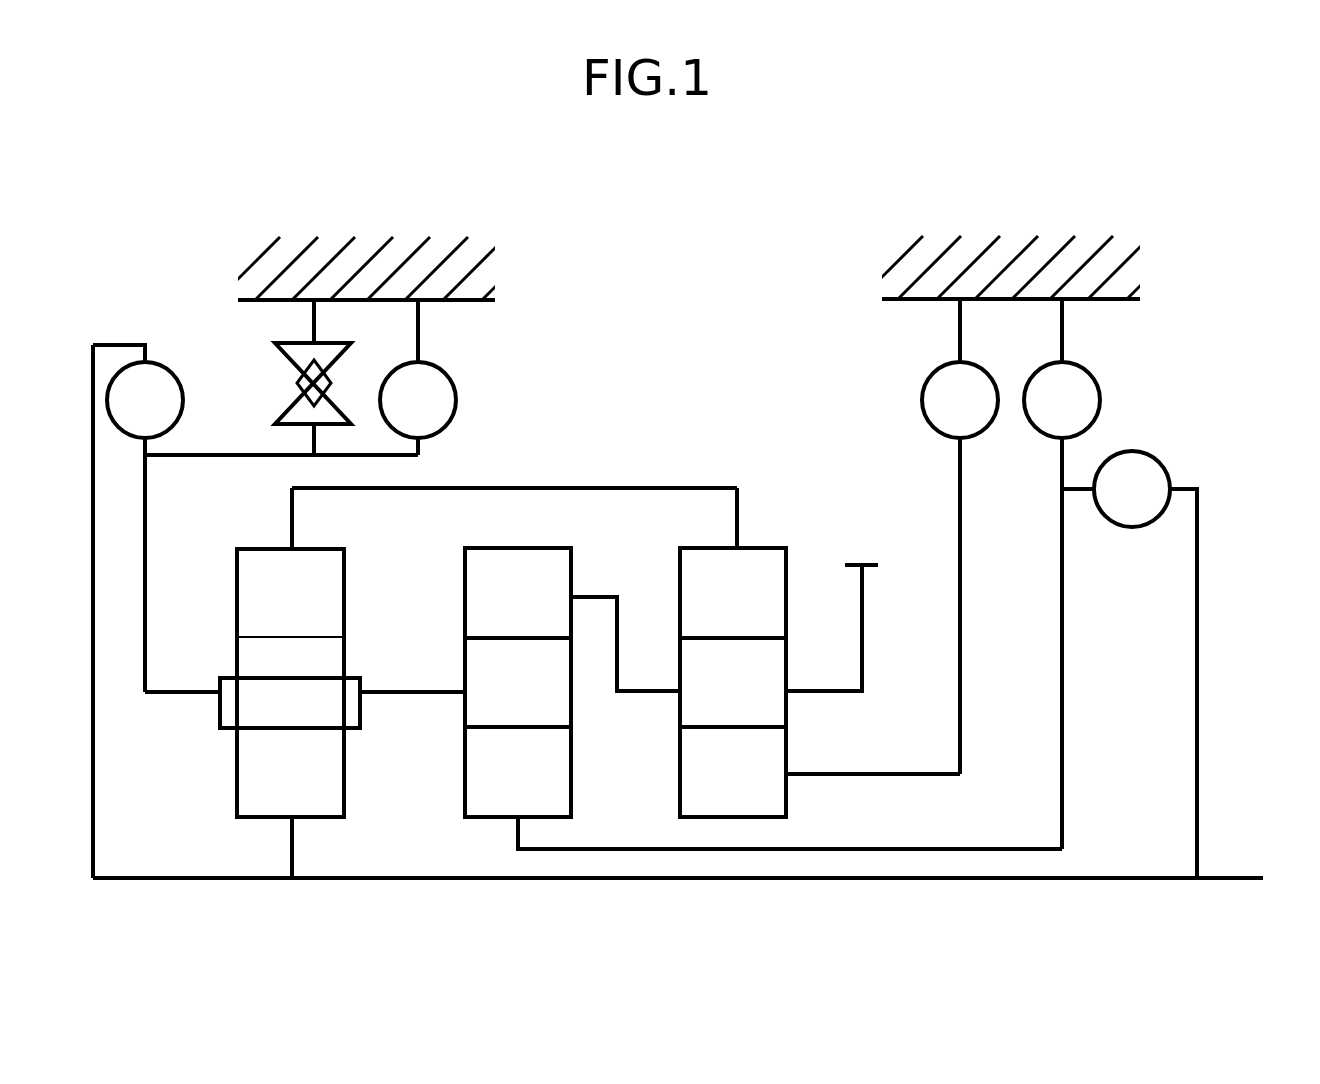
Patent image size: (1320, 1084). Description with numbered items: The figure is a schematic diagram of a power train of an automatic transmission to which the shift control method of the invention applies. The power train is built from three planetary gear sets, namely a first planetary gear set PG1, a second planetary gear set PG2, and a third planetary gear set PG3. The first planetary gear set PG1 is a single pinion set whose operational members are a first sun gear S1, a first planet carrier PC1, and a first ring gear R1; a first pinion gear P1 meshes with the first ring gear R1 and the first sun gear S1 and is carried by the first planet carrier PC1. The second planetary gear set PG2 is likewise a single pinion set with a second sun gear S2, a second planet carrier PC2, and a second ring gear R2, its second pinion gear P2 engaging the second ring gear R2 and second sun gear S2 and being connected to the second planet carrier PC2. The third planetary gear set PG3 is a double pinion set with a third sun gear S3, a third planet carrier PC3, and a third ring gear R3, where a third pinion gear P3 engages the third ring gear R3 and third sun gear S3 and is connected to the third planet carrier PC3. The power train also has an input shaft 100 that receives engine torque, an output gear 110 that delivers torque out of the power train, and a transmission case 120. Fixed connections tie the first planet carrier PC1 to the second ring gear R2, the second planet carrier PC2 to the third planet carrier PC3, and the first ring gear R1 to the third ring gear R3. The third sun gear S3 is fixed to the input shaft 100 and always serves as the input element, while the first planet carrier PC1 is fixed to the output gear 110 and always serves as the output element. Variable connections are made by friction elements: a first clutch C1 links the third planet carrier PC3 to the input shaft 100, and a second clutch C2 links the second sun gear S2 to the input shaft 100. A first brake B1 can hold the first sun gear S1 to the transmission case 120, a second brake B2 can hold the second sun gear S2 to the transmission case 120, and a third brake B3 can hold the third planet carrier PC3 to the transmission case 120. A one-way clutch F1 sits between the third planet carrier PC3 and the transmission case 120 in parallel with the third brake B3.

The input shaft 100 is at (1217, 883).
The output gear 110 is at (870, 568).
The transmission case 120 is at (485, 270).
The first planetary gear set PG1 is at (820, 599).
The second planetary gear set PG2 is at (677, 615).
The third planetary gear set PG3 is at (264, 670).
The first ring gear R1 is at (733, 609).
The second ring gear R2 is at (518, 609).
The third ring gear R3 is at (290, 562).
The first pinion gear P1 is at (733, 699).
The second pinion gear P2 is at (518, 699).
The third pinion gear P3 is at (290, 685).
The first sun gear S1 is at (842, 773).
The second sun gear S2 is at (785, 803).
The third sun gear S3 is at (292, 818).
The first planet carrier PC1 is at (625, 644).
The second planet carrier PC2 is at (412, 672).
The third planet carrier PC3 is at (182, 672).
The first clutch C1 is at (255, 518).
The second clutch C2 is at (1129, 664).
The first brake B1 is at (960, 536).
The second brake B2 is at (1062, 574).
The third brake B3 is at (418, 377).
The one-way clutch F1 is at (262, 377).